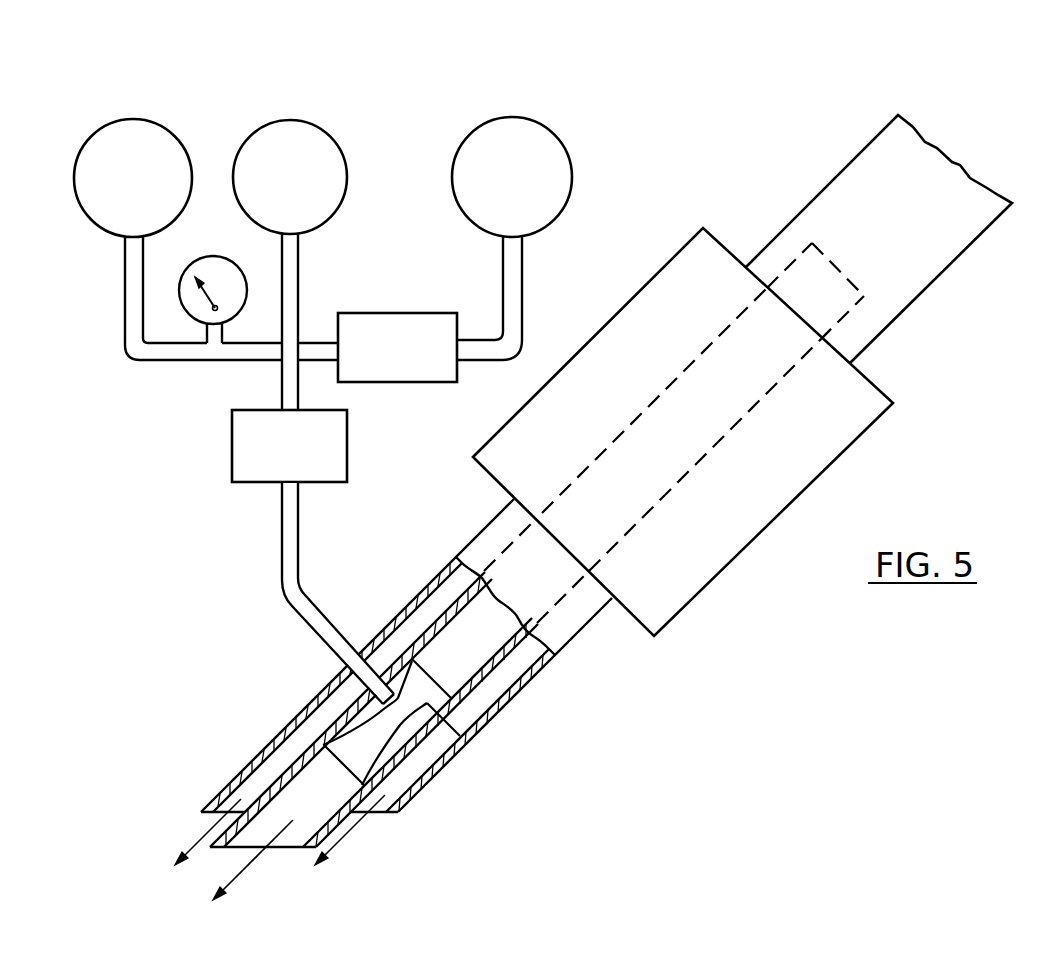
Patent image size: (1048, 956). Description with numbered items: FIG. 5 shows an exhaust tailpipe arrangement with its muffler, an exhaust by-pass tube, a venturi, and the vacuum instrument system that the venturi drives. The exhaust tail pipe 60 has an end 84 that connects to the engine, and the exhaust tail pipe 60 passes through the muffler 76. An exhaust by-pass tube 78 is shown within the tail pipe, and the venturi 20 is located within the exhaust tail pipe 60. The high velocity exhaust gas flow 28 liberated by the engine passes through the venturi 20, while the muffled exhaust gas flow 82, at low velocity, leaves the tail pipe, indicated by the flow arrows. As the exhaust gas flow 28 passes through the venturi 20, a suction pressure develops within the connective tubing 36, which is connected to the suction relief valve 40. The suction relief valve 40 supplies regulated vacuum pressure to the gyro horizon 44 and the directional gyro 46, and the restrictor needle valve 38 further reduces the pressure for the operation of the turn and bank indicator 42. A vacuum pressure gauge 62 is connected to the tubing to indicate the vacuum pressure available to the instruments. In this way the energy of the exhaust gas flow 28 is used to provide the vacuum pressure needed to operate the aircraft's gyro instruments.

The venturi 20 is at (452, 740).
The exhaust gas flow (high velocity) 28 is at (245, 870).
The connective tubing 36 is at (300, 538).
The restrictor needle valve 38 is at (382, 313).
The suction relief valve 40 is at (243, 410).
The turn and bank indicator 42 is at (563, 138).
The gyro horizon 44 is at (332, 130).
The directional gyro 46 is at (173, 133).
The exhaust tail pipe 60 is at (312, 693).
The vacuum pressure gauge 62 is at (185, 273).
The muffler 76 is at (800, 495).
The exhaust by-pass tube 78 is at (497, 670).
The muffled exhaust gas flow (low velocity) 82 is at (203, 832).
The end 84 is at (928, 140).